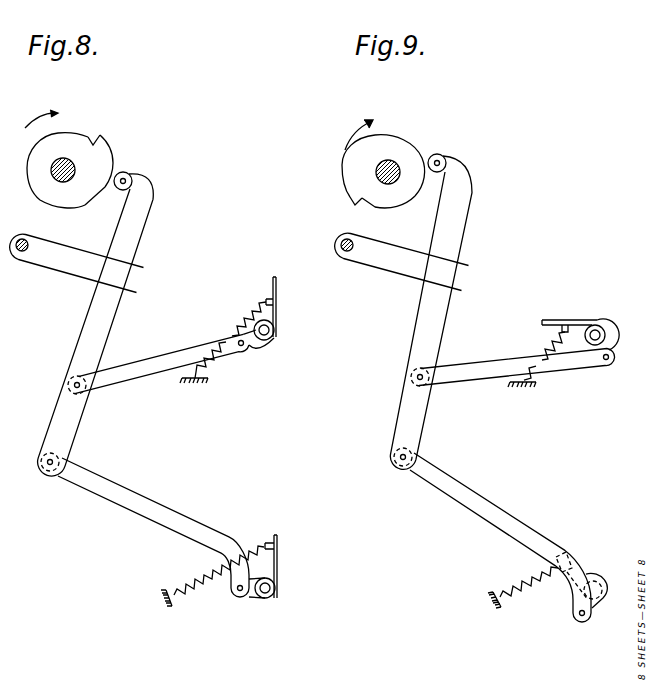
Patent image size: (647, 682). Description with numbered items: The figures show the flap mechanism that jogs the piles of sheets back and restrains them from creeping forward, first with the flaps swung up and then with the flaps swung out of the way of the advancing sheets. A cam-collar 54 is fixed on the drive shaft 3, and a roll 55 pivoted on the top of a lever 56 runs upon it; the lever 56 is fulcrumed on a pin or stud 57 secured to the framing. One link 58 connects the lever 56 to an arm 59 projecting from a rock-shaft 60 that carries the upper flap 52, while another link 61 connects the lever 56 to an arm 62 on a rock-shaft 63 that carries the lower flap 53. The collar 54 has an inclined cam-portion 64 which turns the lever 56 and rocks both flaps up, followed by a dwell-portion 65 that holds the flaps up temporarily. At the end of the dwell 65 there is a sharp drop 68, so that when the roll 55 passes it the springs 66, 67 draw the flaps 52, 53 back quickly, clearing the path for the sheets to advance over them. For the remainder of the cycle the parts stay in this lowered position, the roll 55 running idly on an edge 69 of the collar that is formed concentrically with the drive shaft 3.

In FIG. 8, the drive shaft 3 is at (69, 175).
In FIG. 9, the drive shaft 3 is at (399, 172).
In FIG. 8, the upper flap 52 is at (276, 281).
In FIG. 9, the upper flap 52 is at (578, 322).
In FIG. 8, the lower flap 53 is at (278, 548).
In FIG. 9, the lower flap 53 is at (584, 580).
In FIG. 8, the cam-collar 54 is at (40, 185).
In FIG. 9, the cam-collar 54 is at (381, 186).
In FIG. 8, the roll 55 is at (133, 180).
In FIG. 9, the roll 55 is at (437, 163).
In FIG. 8, the lever 56 is at (129, 246).
In FIG. 9, the lever 56 is at (457, 237).
In FIG. 8, the pin or stud 57 is at (22, 257).
In FIG. 9, the pin or stud 57 is at (347, 253).
In FIG. 8, the link 58 is at (131, 371).
In FIG. 9, the link 58 is at (571, 366).
In FIG. 8, the arm 59 is at (253, 341).
In FIG. 9, the arm 59 is at (604, 346).
In FIG. 8, the rock-shaft 60 is at (274, 331).
In FIG. 8, the link 61 is at (144, 506).
In FIG. 9, the link 61 is at (500, 516).
In FIG. 8, the arm 62 is at (251, 595).
In FIG. 9, the arm 62 is at (593, 597).
In FIG. 8, the rock-shaft 63 is at (276, 590).
In FIG. 9, the rock-shaft 63 is at (593, 590).
In FIG. 8, the inclined cam-portion 64 is at (92, 194).
In FIG. 9, the inclined cam-portion 64 is at (361, 152).
In FIG. 8, the dwell-portion 65 is at (110, 152).
In FIG. 9, the dwell-portion 65 is at (346, 184).
In FIG. 8, the spring 66 is at (244, 319).
In FIG. 9, the spring 66 is at (548, 343).
In FIG. 8, the spring 67 is at (229, 580).
In FIG. 9, the spring 67 is at (562, 580).
In FIG. 8, the sharp drop 68 is at (92, 142).
In FIG. 9, the sharp drop 68 is at (362, 198).
In FIG. 9, the concentric edge 69 is at (410, 154).